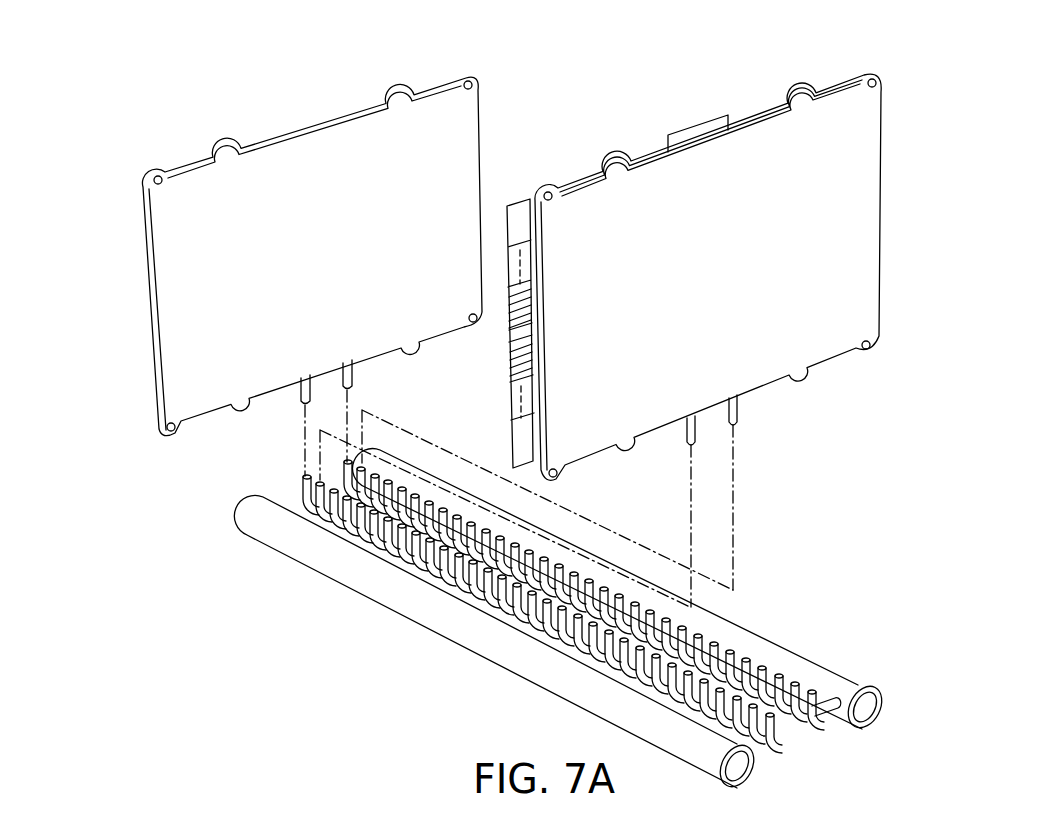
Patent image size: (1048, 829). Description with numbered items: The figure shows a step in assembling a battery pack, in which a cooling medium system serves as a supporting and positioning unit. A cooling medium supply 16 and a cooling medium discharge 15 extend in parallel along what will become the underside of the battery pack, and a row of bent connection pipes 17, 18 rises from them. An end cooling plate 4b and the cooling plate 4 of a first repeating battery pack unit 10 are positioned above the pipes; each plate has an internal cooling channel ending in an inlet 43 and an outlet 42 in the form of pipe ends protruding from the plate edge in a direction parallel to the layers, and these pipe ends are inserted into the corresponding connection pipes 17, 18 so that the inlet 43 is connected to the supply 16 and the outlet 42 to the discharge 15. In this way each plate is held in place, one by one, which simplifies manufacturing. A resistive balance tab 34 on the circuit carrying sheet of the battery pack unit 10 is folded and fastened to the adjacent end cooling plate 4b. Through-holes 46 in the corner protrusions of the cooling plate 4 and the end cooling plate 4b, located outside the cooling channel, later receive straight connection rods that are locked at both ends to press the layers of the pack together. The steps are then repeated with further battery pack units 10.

The battery pack unit 10 is at (942, 170).
The cooling plate 4 is at (736, 266).
The end cooling plate 4b is at (297, 176).
The resistive balance tab 34 is at (697, 133).
The through-hole 46 is at (878, 345).
The outlet 42 is at (693, 428).
The inlet 43 is at (740, 412).
The cooling medium discharge 15 is at (495, 640).
The cooling medium supply 16 is at (786, 657).
The connection pipe 17 is at (546, 631).
The connection pipe 18 is at (812, 720).